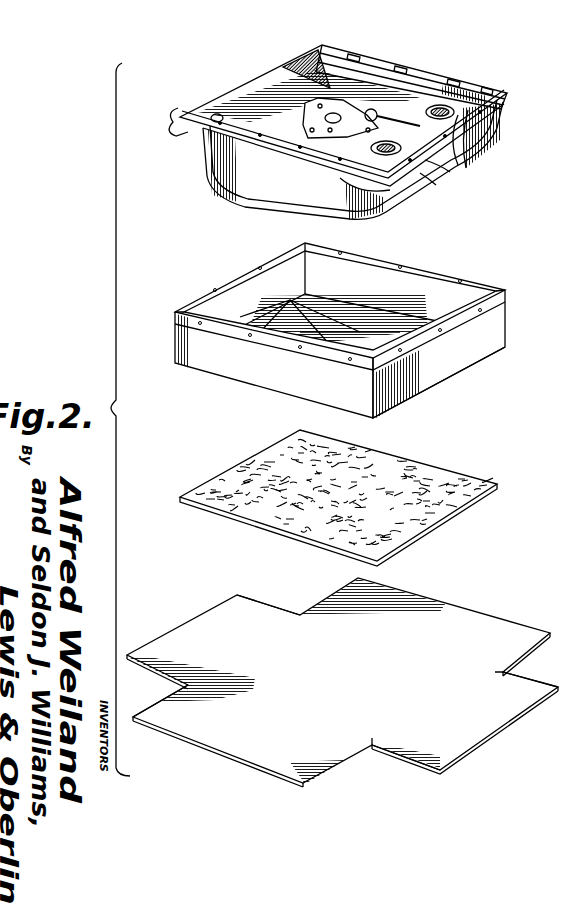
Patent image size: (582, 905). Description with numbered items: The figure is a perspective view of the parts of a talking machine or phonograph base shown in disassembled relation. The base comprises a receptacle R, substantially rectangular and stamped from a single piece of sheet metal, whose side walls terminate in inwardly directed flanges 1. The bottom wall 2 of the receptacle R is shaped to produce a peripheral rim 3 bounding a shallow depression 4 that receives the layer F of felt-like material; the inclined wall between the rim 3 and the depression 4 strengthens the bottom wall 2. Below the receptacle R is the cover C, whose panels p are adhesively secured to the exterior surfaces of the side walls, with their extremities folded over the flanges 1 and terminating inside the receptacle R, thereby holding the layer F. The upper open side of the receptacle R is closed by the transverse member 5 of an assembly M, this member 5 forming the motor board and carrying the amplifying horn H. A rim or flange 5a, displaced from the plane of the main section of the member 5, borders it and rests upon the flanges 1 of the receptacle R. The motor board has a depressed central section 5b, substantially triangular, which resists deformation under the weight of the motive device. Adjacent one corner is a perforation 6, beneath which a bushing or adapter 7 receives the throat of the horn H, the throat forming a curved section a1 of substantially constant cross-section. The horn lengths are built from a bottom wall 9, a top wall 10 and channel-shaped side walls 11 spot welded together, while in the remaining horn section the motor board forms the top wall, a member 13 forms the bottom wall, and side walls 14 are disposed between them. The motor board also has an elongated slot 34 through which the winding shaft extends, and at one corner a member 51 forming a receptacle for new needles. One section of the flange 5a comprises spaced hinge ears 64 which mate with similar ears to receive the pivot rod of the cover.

The assembly M is at (510, 97).
The transverse member 5 is at (272, 97).
The rim or flange 5a is at (184, 130).
The depressed central section 5b is at (317, 104).
The bottom wall 13 is at (316, 56).
The member forming a receptacle 51 is at (224, 119).
The elongated slot 34 is at (387, 118).
The perforation 6 is at (488, 113).
The bushing or adapter 7 is at (492, 135).
The hinge ears 64 is at (490, 88).
The amplifying horn H is at (228, 188).
The side wall 14 is at (257, 190).
The side wall 11 is at (412, 188).
The curved section a1 is at (465, 160).
The top wall 10 is at (432, 160).
The bottom wall 9 is at (430, 178).
The receptacle R is at (508, 298).
The inwardly directed flanges 1 is at (204, 302).
The bottom wall 2 is at (378, 336).
The peripheral rim 3 is at (292, 303).
The shallow depression 4 is at (316, 322).
The layer of felt-like material F is at (470, 477).
The cover C is at (528, 628).
The panels p is at (187, 623).